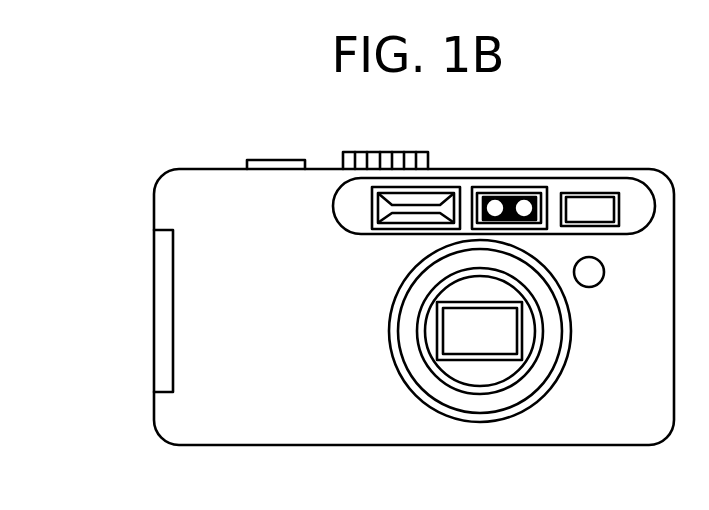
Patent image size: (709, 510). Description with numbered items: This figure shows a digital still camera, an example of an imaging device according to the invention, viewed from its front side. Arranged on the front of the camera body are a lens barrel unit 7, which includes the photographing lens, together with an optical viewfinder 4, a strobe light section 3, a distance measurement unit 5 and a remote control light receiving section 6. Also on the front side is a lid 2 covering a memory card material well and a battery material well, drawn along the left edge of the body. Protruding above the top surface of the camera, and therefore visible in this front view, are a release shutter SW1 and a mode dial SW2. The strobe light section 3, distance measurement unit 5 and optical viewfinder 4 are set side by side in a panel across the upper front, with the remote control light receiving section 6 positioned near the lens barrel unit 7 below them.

The lid 2 is at (162, 312).
The strobe light section 3 is at (438, 198).
The optical viewfinder 4 is at (600, 215).
The distance measurement unit 5 is at (508, 198).
The remote control light receiving section 6 is at (590, 287).
The lens barrel unit 7 is at (503, 373).
The release shutter SW1 is at (283, 158).
The mode dial SW2 is at (402, 152).